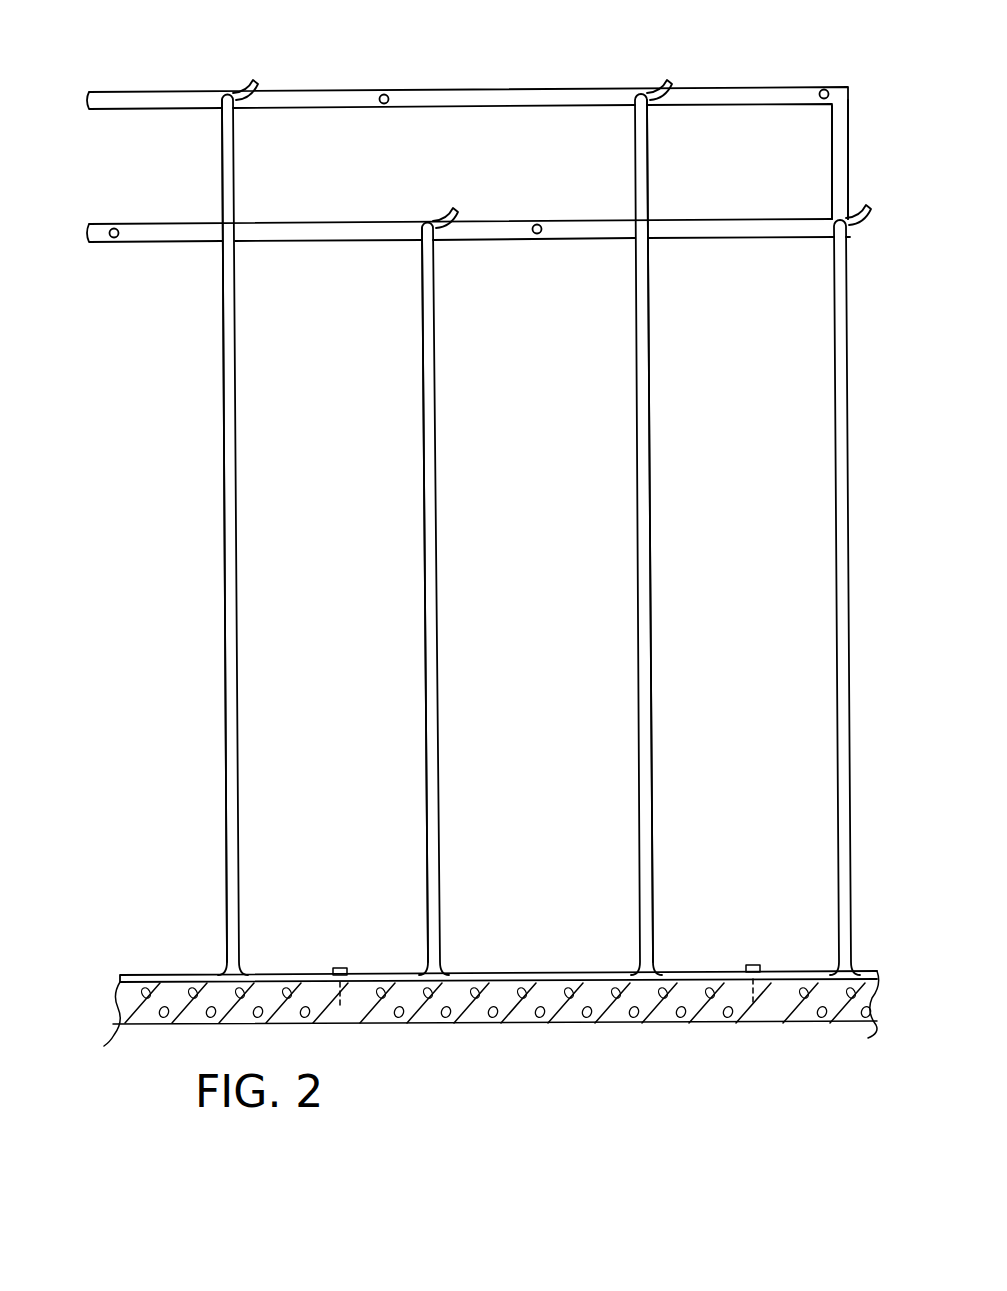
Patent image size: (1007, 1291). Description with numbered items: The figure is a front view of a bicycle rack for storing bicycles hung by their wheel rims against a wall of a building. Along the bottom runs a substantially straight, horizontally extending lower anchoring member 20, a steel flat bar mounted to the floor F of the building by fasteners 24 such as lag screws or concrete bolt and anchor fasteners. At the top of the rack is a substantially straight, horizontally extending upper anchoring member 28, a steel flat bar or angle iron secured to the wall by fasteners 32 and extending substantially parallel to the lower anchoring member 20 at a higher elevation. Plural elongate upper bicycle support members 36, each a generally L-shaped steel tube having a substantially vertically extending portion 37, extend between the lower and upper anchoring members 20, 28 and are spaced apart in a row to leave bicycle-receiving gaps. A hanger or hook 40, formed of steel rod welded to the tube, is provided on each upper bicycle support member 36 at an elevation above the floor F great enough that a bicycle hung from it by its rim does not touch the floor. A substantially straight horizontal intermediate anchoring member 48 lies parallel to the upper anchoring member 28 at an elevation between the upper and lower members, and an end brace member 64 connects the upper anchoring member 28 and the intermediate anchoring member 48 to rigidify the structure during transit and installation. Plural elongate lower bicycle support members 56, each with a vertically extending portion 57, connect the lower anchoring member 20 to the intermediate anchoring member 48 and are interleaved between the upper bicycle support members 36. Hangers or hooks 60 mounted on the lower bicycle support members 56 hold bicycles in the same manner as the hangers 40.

The lower anchoring member 20 is at (540, 960).
The fasteners 24 is at (340, 967).
The upper anchoring member 28 is at (475, 74).
The fasteners 32 is at (385, 94).
The upper bicycle support members 36 is at (252, 517).
The vertically extending portion 37 is at (224, 597).
The hanger or hook 40 is at (249, 86).
The intermediate anchoring member 48 is at (358, 210).
The lower bicycle support members 56 is at (451, 414).
The vertically extending portion 57 is at (437, 612).
The hangers or hooks 60 is at (445, 230).
The end brace member 64 is at (816, 158).
The floor F is at (580, 1022).